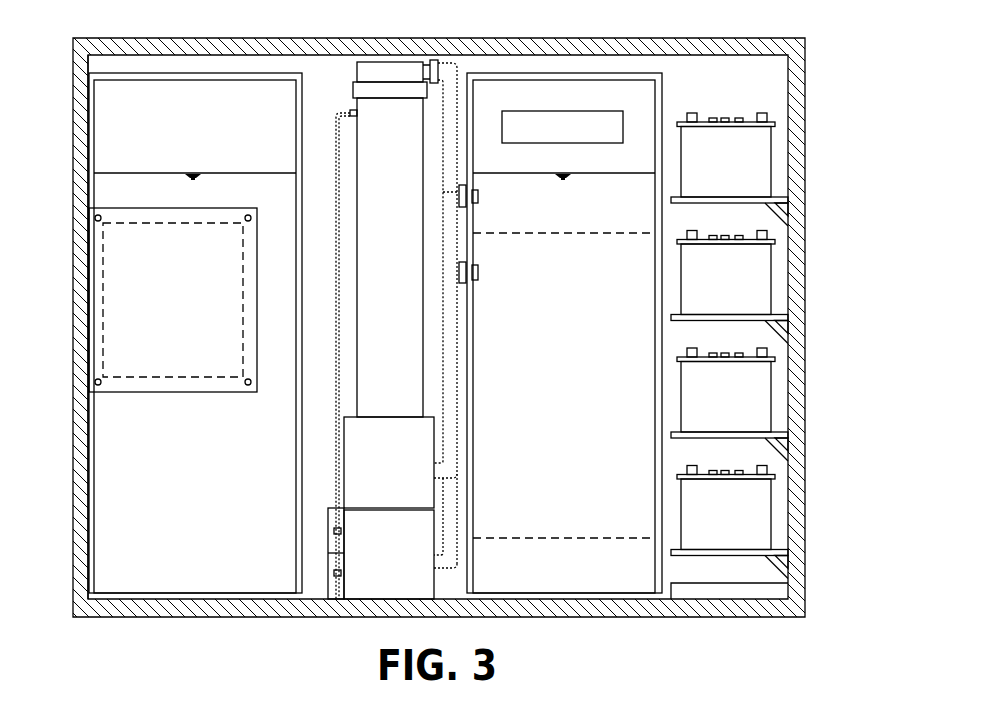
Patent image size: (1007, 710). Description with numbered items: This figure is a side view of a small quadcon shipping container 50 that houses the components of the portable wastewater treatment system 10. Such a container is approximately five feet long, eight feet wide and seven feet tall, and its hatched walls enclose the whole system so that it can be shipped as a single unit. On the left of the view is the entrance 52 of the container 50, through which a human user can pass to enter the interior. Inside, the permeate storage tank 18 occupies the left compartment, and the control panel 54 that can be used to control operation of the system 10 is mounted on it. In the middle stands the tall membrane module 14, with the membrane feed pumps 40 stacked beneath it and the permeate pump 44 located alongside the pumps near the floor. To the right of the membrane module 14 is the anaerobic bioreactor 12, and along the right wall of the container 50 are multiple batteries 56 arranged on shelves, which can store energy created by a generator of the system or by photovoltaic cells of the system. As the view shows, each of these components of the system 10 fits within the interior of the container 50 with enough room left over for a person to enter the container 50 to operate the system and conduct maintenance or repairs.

The portable wastewater treatment system 10 is at (448, 326).
The anaerobic bioreactor 12 is at (550, 386).
The membrane module 14 is at (377, 274).
The permeate storage tank 18 is at (195, 333).
The membrane feed pumps 40 is at (377, 473).
The permeate pump 44 is at (333, 586).
The quadcon container 50 is at (797, 335).
The entrance 52 is at (74, 556).
The control panel 54 is at (160, 311).
The batteries 56 is at (711, 171).